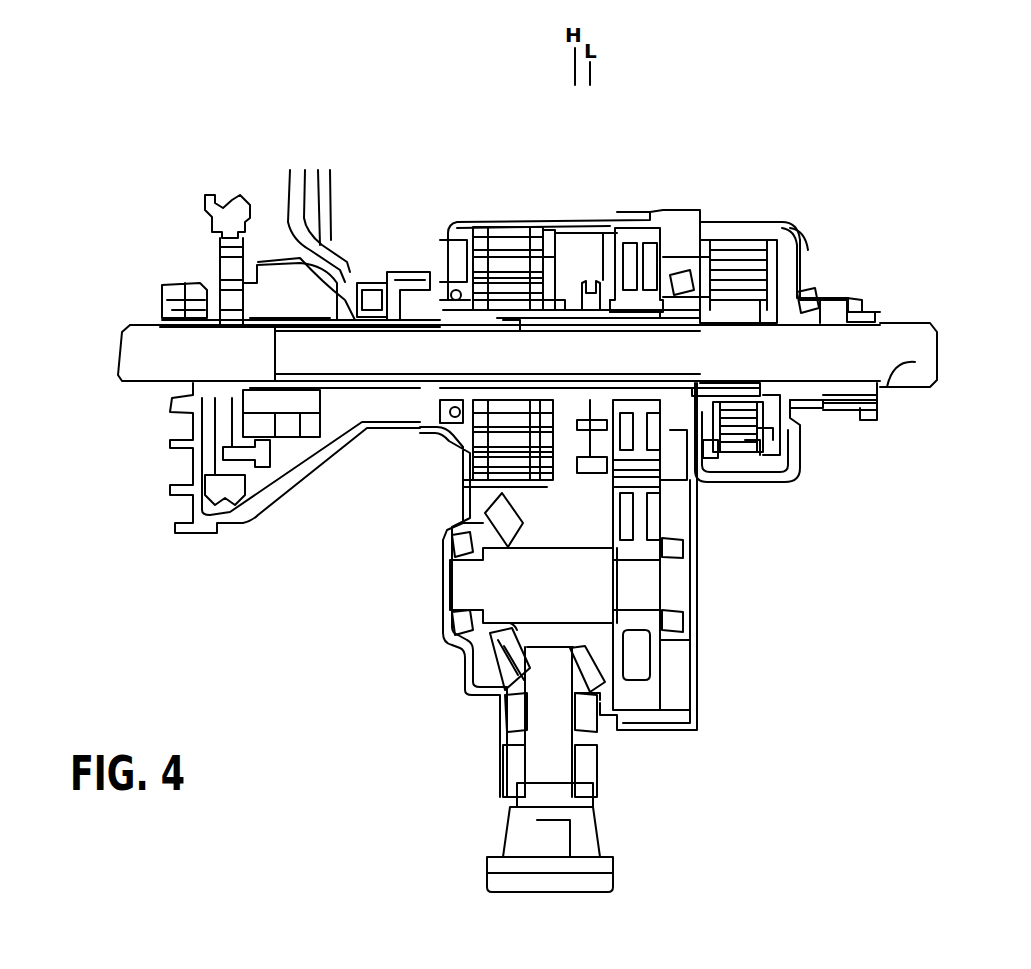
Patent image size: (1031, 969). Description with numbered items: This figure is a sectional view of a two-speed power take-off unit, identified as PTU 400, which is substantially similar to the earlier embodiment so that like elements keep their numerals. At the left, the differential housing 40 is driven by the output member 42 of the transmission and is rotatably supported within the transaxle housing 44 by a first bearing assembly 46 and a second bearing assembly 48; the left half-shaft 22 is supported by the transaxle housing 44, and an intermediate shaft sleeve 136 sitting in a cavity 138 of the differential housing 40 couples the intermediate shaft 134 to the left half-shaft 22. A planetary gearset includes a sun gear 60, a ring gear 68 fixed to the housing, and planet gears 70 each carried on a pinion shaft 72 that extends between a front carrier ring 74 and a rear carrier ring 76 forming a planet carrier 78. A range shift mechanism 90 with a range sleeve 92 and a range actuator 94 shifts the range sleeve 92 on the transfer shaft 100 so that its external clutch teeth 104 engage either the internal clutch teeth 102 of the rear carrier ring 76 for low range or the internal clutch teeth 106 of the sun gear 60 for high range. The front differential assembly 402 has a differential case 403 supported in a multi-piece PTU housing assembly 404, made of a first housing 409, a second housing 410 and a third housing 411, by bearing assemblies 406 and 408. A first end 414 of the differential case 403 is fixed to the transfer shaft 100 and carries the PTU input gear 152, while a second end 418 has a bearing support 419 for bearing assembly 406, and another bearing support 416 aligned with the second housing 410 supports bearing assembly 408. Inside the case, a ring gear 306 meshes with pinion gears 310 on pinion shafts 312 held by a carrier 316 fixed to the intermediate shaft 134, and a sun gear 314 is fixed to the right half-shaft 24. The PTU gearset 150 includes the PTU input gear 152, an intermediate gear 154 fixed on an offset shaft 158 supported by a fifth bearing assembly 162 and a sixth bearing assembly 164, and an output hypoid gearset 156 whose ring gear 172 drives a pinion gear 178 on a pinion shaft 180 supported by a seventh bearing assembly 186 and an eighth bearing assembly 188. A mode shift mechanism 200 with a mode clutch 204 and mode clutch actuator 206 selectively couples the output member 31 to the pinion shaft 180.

The left half-shaft 22 is at (140, 362).
The right half-shaft 24 is at (912, 388).
The output member 31 is at (466, 811).
The differential housing 40 is at (258, 262).
The output member 42 is at (228, 205).
The transaxle housing 44 is at (320, 245).
The first bearing assembly 46 is at (175, 300).
The second bearing assembly 48 is at (367, 290).
The sun gear 60 is at (395, 312).
The ring gear 68 is at (492, 232).
The planet gears 70 is at (528, 232).
The pinion shaft 72 is at (572, 238).
The front carrier ring 74 is at (470, 242).
The rear carrier ring 76 is at (553, 232).
The planet carrier 78 is at (598, 225).
The range shift mechanism 90 is at (600, 488).
The range sleeve 92 is at (588, 300).
The range actuator 94 is at (588, 473).
The transfer shaft 100 is at (632, 325).
The internal clutch teeth 102 is at (553, 305).
The external clutch teeth 104 is at (530, 398).
The internal clutch teeth 106 is at (515, 325).
The intermediate shaft 134 is at (300, 365).
The intermediate shaft sleeve 136 is at (257, 383).
The cavity 138 is at (310, 314).
The PTU gearset 150 is at (764, 555).
The PTU input gear 152 is at (652, 222).
The intermediate gear 154 is at (650, 682).
The output hypoid gearset 156 is at (446, 658).
The offset shaft 158 is at (673, 595).
The fifth bearing assembly 162 is at (672, 623).
The sixth bearing assembly 164 is at (458, 626).
The ring gear 172 is at (500, 650).
The pinion gear 178 is at (578, 655).
The pinion shaft 180 is at (587, 672).
The seventh bearing assembly 186 is at (593, 715).
The eighth bearing assembly 188 is at (587, 750).
The mode shift mechanism 200 is at (537, 808).
The mode clutch 204 is at (560, 790).
The mode clutch actuator 206 is at (552, 805).
The ring gear 306 is at (773, 453).
The pinion gears 310 is at (753, 450).
The pinion shaft 312 is at (763, 432).
The sun gear 314 is at (797, 400).
The carrier 316 is at (752, 375).
The PTU 400 is at (920, 128).
The front differential assembly 402 is at (790, 212).
The differential case 403 is at (760, 245).
The PTU housing assembly 404 is at (624, 220).
The bearing assembly 406 is at (868, 428).
The bearing assembly 408 is at (687, 282).
The first housing 409 is at (615, 222).
The second housing 410 is at (693, 240).
The third housing 411 is at (800, 228).
The first end 414 is at (693, 392).
The bearing support 416 is at (710, 455).
The second end 418 is at (856, 308).
The bearing support 419 is at (815, 300).